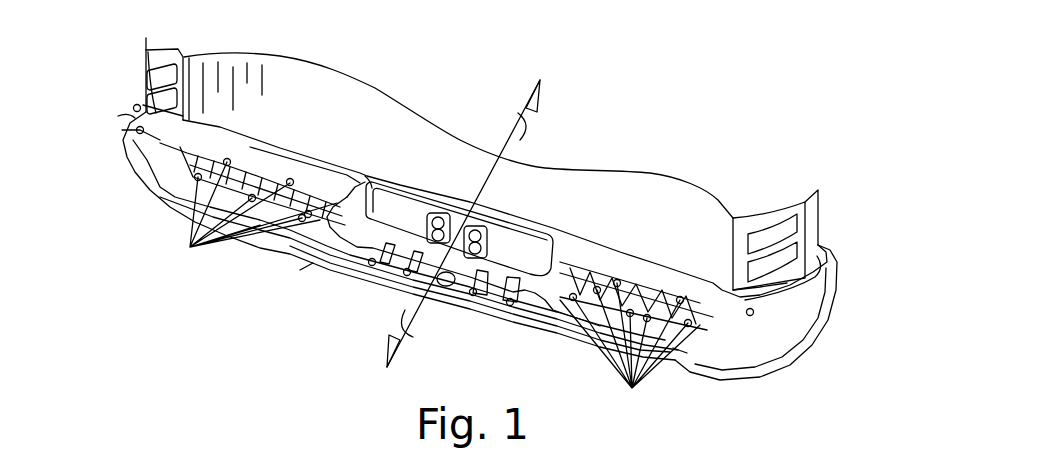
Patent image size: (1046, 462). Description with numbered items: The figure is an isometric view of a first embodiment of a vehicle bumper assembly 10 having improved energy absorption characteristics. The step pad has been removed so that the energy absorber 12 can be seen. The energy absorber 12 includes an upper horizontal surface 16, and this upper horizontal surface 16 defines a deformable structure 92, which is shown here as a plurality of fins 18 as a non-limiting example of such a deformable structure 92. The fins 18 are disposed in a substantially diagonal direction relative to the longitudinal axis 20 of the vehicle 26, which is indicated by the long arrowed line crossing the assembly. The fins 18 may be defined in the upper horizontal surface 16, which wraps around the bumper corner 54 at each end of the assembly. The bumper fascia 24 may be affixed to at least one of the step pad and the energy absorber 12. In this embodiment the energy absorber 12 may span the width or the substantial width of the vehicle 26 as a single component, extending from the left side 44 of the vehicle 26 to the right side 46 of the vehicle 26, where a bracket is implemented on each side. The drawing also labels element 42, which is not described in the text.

The vehicle bumper assembly 10 is at (777, 242).
The energy absorber 12 is at (297, 195).
The upper horizontal surface 16 is at (232, 160).
The fins 18 is at (827, 337).
The longitudinal axis 20 is at (530, 135).
The bumper fascia 24 is at (317, 255).
The vehicle 26 is at (683, 215).
The connector clips 42 is at (257, 187).
The left side 44 is at (138, 192).
The right side 46 is at (680, 380).
The bumper corner 54 is at (135, 117).
The deformable structure 92 is at (230, 183).